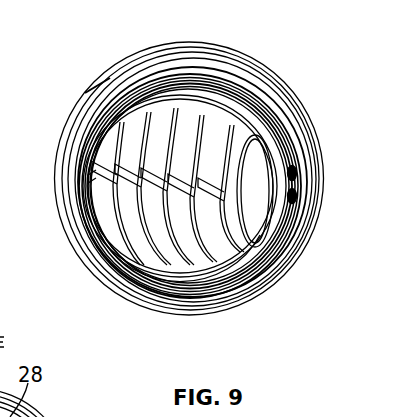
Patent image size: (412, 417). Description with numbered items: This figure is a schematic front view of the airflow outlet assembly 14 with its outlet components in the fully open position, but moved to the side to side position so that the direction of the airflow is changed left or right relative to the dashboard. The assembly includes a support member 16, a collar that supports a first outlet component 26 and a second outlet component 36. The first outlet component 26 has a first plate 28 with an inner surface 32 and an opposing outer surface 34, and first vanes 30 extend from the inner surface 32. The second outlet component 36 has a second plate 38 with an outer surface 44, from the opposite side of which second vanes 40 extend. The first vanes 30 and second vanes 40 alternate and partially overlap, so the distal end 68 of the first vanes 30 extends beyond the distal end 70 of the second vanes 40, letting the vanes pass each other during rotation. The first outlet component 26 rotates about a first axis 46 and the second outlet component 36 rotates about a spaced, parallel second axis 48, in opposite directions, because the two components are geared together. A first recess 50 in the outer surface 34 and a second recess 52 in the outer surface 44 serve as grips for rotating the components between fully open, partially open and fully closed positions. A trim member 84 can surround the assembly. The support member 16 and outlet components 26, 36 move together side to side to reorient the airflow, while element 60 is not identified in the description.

The airflow outlet assembly 14 is at (340, 143).
The support member 16 is at (275, 222).
The first outlet component 26 is at (248, 132).
The first plate 28 is at (186, 88).
The first vane 30 is at (128, 131).
The inner surface 32 is at (52, 416).
The outer surface 34 is at (229, 120).
The second outlet component 36 is at (256, 260).
The second plate 38 is at (133, 273).
The second vane 40 is at (92, 212).
The outer surface 44 is at (229, 264).
The first axis 46 is at (302, 173).
The second axis 48 is at (302, 197).
The first recess 50 is at (167, 90).
The second recess 52 is at (170, 283).
The outer ring 60 is at (185, 43).
The distal end 68 is at (113, 252).
The distal end 70 is at (262, 128).
The trim member 84 is at (68, 158).